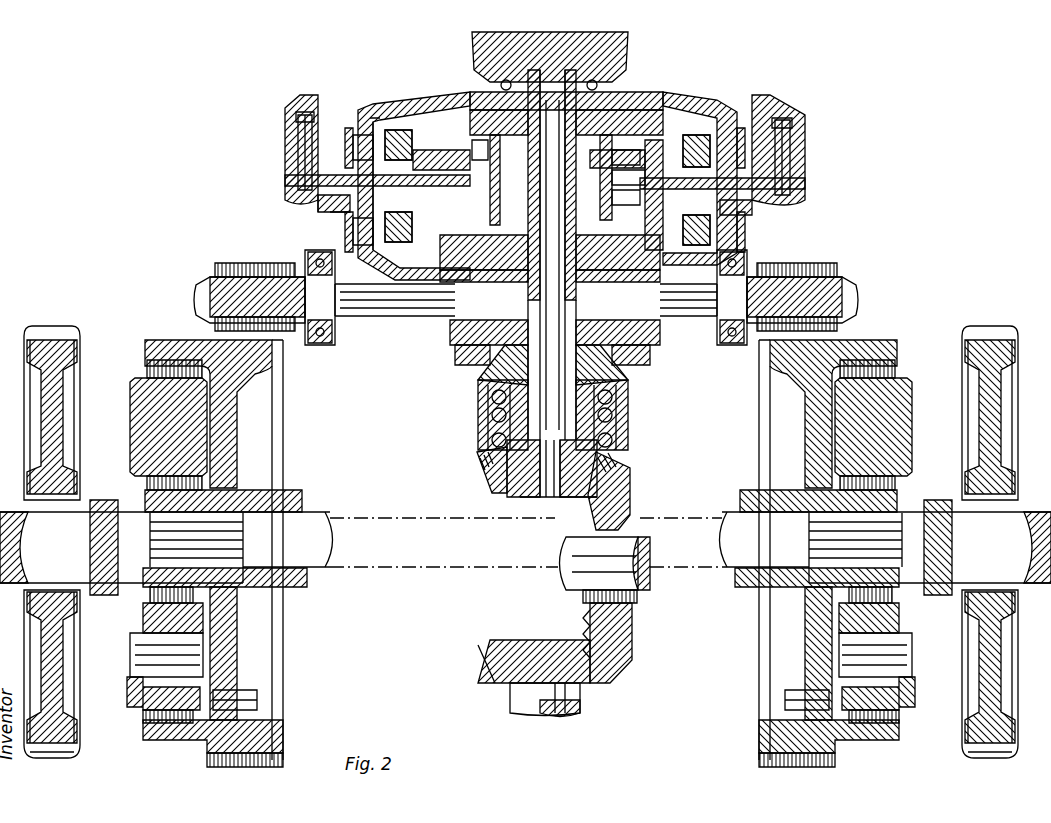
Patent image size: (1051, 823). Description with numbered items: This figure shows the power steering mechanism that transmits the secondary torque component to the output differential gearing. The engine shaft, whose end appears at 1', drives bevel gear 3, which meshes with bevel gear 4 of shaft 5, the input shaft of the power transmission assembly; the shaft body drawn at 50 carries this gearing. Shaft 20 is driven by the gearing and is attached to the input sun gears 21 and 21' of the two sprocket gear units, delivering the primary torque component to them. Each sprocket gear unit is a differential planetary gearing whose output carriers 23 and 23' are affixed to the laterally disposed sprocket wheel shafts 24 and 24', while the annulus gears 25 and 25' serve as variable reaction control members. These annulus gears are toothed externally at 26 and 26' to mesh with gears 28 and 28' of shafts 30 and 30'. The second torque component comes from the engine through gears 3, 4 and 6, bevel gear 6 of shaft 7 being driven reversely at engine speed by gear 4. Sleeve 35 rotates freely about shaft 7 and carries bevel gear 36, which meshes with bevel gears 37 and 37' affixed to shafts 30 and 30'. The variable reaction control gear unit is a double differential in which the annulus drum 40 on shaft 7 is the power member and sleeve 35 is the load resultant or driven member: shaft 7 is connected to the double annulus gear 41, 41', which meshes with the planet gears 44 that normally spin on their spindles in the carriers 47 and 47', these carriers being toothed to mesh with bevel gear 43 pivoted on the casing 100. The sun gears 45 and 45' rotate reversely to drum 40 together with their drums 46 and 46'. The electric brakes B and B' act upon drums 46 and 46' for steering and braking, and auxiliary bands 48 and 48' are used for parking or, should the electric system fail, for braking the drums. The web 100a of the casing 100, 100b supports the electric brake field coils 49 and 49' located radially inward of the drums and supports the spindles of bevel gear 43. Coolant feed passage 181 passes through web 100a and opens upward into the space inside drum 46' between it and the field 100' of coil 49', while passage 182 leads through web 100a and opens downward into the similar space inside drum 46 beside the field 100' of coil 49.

The hub 1' is at (557, 700).
The bevel gear 3 is at (490, 655).
The bevel gear 4 is at (620, 645).
The shaft 5 is at (640, 596).
The bevel gear 6 is at (488, 478).
The shaft 7 is at (530, 494).
The shaft 20 is at (375, 525).
The input sun gear 21 is at (216, 550).
The input sun gear 21' is at (826, 550).
The output carrier 23 is at (197, 644).
The output carrier 23' is at (859, 644).
The sprocket wheel shaft 24 is at (71, 542).
The sprocket wheel shaft 24' is at (977, 542).
The annulus gear 25 is at (151, 686).
The annulus gear 25' is at (903, 686).
The external teeth 26 is at (228, 729).
The external teeth 26' is at (829, 733).
The gear 28 is at (249, 282).
The gear 28' is at (810, 284).
The shaft 30 is at (380, 297).
The shaft 30' is at (703, 297).
The sleeve 35 is at (500, 350).
The bevel gear 36 is at (605, 372).
The bevel gear 37 is at (455, 354).
The bevel gear 37' is at (633, 355).
The annulus drum 40 is at (639, 173).
The annulus 41 is at (655, 187).
The annulus 41' is at (641, 154).
The bevel gear 43 is at (476, 138).
The planet gear 44 is at (494, 135).
The sun gear 45 is at (618, 247).
The sun gear 45' is at (619, 113).
The drum 46 is at (589, 255).
The drum 46' is at (573, 119).
The carrier 47 is at (671, 195).
The carrier 47' is at (628, 146).
The auxiliary band 48 is at (548, 232).
The auxiliary band 48' is at (544, 128).
The electric brake field coil 49 is at (345, 147).
The electric brake field coil 49' is at (354, 248).
The shaft 50 is at (572, 552).
The casing 100 is at (522, 109).
The field 100' is at (414, 174).
The web 100a is at (318, 205).
The casing portion 100b is at (290, 160).
The coolant feed passage 181 is at (286, 180).
The coolant feed passage 182 is at (806, 180).
The electric brake B is at (368, 225).
The electric brake B' is at (373, 123).